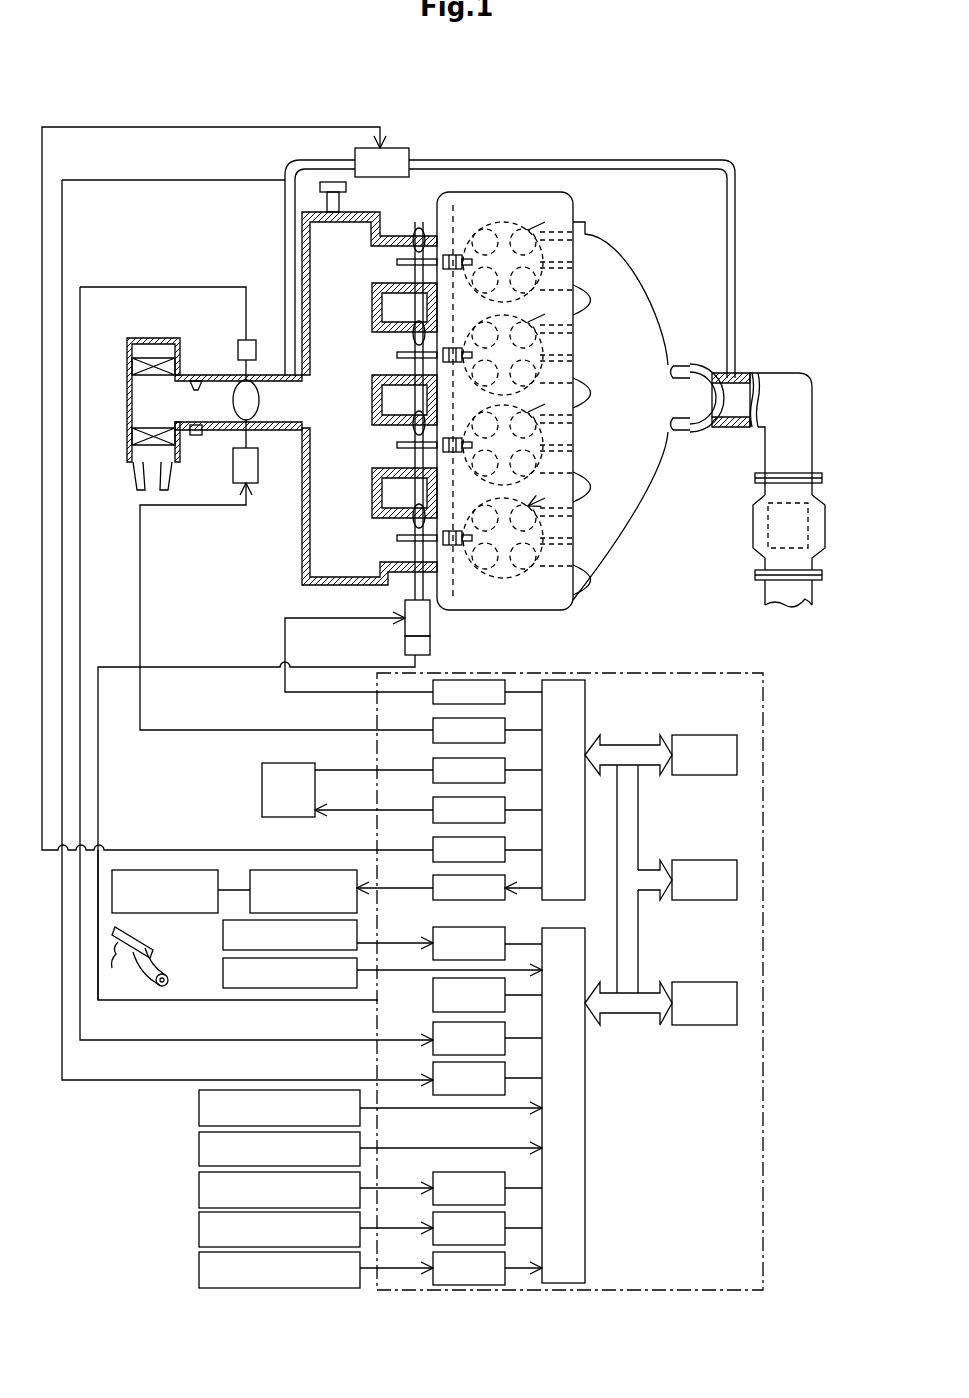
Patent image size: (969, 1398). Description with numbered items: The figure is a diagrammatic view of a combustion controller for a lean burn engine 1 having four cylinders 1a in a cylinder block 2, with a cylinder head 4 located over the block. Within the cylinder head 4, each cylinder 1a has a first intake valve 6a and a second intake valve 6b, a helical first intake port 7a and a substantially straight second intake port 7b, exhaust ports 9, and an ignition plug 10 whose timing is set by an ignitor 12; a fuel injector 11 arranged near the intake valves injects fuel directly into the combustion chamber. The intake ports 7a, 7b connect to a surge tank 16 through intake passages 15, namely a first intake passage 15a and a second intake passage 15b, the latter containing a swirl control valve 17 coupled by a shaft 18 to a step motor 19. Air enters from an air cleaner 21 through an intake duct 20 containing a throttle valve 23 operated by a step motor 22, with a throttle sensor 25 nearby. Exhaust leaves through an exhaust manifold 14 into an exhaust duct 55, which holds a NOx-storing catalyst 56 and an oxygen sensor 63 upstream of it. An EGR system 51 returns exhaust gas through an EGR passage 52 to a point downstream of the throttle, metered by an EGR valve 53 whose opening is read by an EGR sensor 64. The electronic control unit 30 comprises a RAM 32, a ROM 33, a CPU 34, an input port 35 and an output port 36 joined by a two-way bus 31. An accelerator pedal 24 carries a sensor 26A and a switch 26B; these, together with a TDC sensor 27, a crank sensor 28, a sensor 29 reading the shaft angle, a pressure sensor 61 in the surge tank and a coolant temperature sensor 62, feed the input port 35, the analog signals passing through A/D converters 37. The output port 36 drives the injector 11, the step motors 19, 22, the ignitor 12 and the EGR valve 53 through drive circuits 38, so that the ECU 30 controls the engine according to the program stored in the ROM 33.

The engine 1 is at (580, 192).
The cylinder 1a is at (578, 220).
The cylinder block 2 is at (513, 424).
The cylinder head 4 is at (555, 610).
The first intake valve 6a is at (472, 598).
The second intake valve 6b is at (600, 238).
The first intake port 7a is at (470, 630).
The second intake port 7b is at (491, 351).
The exhaust port 9 is at (578, 266).
The ignition plug 10 is at (165, 891).
The fuel injector 11 is at (455, 250).
The ignitor 12 is at (325, 891).
The exhaust manifold 14 is at (666, 452).
The intake passages 15 is at (396, 230).
The first intake passage 15a is at (397, 270).
The second intake passage 15b is at (397, 252).
The surge tank 16 is at (302, 238).
The swirl control valve 17 is at (420, 230).
The shaft 18 is at (372, 404).
The step motor 19 is at (404, 634).
The intake duct 20 is at (214, 372).
The air cleaner 21 is at (130, 470).
The step motor 22 is at (232, 472).
The throttle valve 23 is at (259, 402).
The accelerator pedal 24 is at (238, 925).
The throttle sensor 25 is at (238, 330).
The sensor 26A is at (328, 935).
The switch 26B is at (382, 973).
The TDC sensor 27 is at (370, 1108).
The crank sensor 28 is at (370, 1149).
The sensor 29 is at (430, 656).
The electronic control unit 30 is at (683, 670).
The two-way bus 31 is at (630, 744).
The RAM 32 is at (706, 735).
The ROM 33 is at (706, 860).
The CPU 34 is at (708, 982).
The input port 35 is at (590, 1142).
The output port 36 is at (585, 688).
The A/D converter 37 is at (434, 918).
The drive circuit 38 is at (420, 708).
The EGR system 51 is at (512, 150).
The EGR passage 52 is at (687, 154).
The EGR valve 53 is at (409, 152).
The exhaust duct 55 is at (816, 390).
The catalyst 56 is at (758, 524).
The pressure sensor 61 is at (285, 196).
The temperature sensor 62 is at (316, 1190).
The oxygen sensor 63 is at (316, 1229).
The EGR sensor 64 is at (316, 1270).